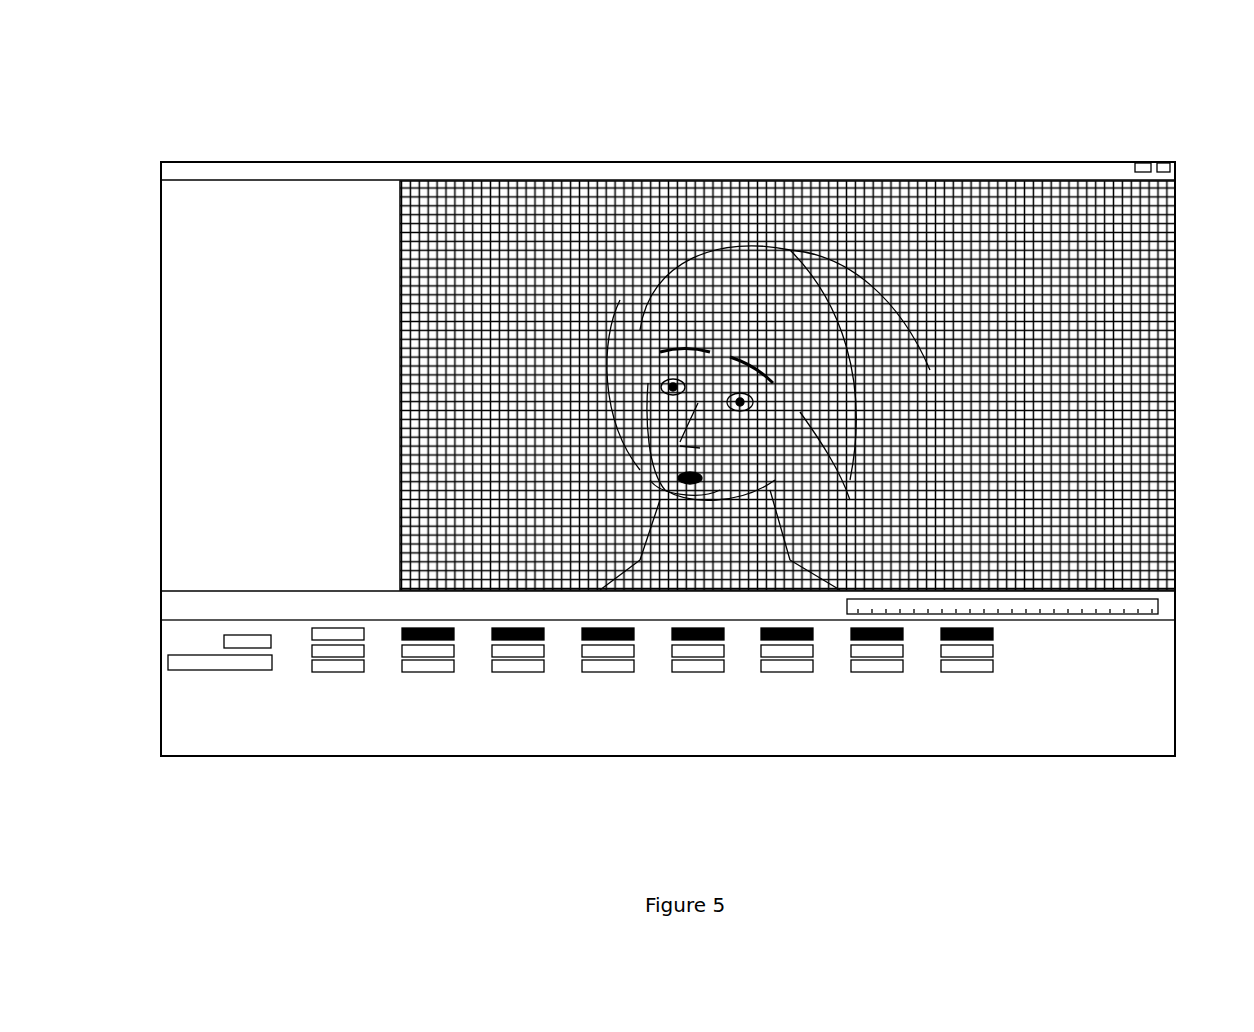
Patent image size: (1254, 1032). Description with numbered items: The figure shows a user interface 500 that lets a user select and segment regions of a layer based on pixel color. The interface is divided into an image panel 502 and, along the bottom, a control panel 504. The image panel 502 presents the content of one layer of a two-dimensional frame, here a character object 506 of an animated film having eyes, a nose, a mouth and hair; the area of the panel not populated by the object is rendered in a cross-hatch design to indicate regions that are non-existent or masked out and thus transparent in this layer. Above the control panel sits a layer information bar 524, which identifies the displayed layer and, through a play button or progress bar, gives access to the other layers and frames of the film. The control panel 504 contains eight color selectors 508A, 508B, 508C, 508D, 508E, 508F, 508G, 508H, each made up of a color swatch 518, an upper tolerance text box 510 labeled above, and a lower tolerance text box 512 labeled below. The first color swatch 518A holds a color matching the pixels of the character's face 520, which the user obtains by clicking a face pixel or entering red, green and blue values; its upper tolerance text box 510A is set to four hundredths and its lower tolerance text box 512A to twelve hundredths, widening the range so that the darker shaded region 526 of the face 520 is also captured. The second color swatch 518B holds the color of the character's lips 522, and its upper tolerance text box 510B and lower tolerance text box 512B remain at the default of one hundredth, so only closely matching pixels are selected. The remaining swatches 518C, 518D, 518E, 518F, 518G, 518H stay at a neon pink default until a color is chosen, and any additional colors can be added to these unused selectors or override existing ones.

The user interface 500 is at (548, 82).
The image panel 502 is at (892, 180).
The control panel 504 is at (1192, 678).
The character object 506 is at (710, 285).
The first color selector 508A is at (242, 674).
The second color selector 508B is at (466, 752).
The color selector 508C is at (560, 743).
The color selector 508D is at (624, 721).
The color selector 508E is at (736, 744).
The color selector 508F is at (813, 740).
The color selector 508G is at (898, 733).
The color selector 508H is at (1030, 724).
The upper tolerance text box 510 is at (1013, 651).
The upper tolerance text box 510A is at (322, 652).
The upper tolerance text box 510B is at (454, 661).
The lower tolerance text box 512 is at (1013, 666).
The lower tolerance text box 512A is at (325, 668).
The lower tolerance text box 512B is at (454, 651).
The color swatch 518 is at (262, 632).
The first color swatch 518A is at (325, 625).
The second color swatch 518B is at (537, 705).
The color swatch 518C is at (545, 636).
The color swatch 518D is at (634, 636).
The color swatch 518E is at (724, 636).
The color swatch 518F is at (797, 712).
The color swatch 518G is at (905, 640).
The color swatch 518H is at (993, 640).
The face 520 is at (660, 355).
The lips 522 is at (660, 478).
The layer information bar 524 is at (1175, 606).
The shaded region 526 is at (800, 412).